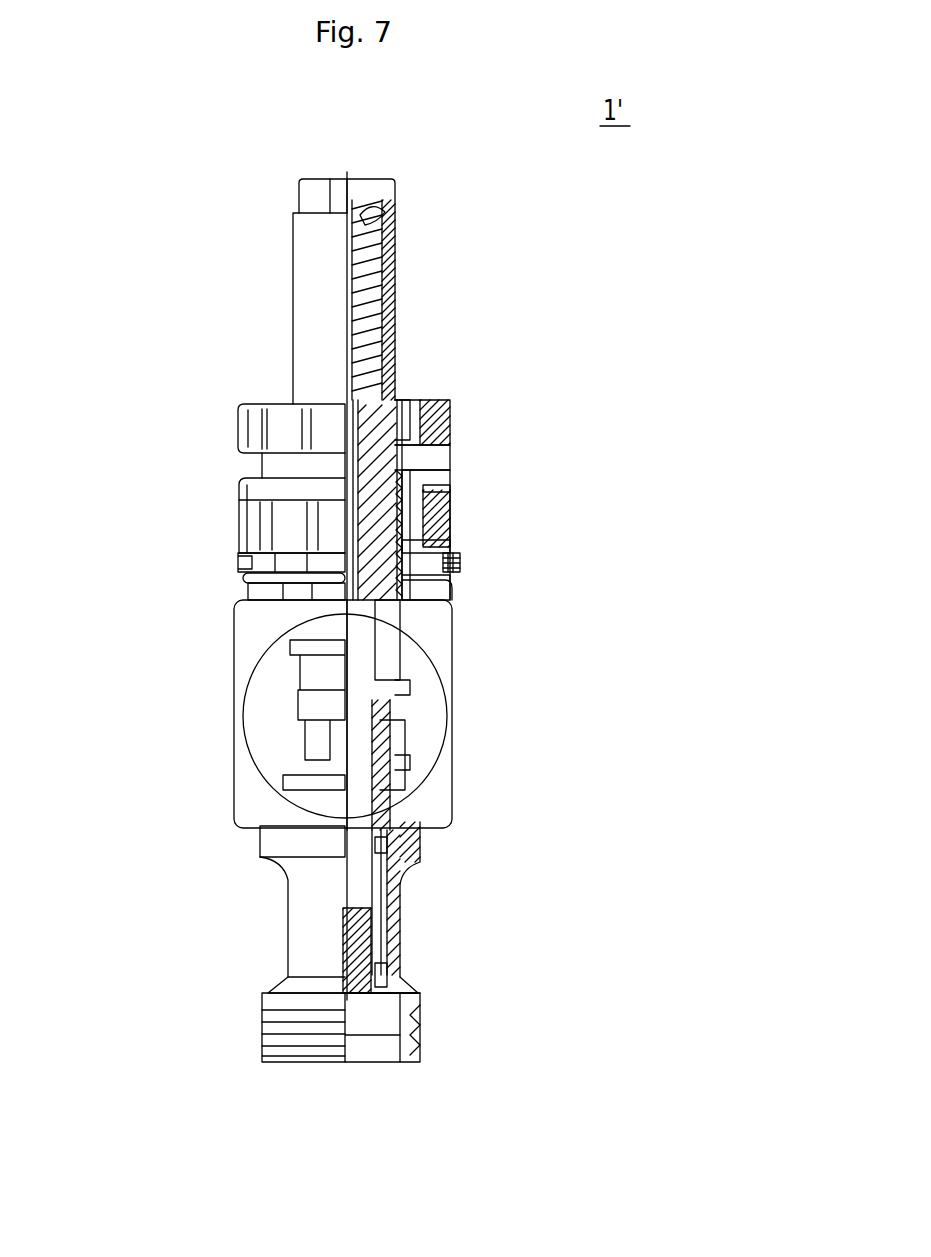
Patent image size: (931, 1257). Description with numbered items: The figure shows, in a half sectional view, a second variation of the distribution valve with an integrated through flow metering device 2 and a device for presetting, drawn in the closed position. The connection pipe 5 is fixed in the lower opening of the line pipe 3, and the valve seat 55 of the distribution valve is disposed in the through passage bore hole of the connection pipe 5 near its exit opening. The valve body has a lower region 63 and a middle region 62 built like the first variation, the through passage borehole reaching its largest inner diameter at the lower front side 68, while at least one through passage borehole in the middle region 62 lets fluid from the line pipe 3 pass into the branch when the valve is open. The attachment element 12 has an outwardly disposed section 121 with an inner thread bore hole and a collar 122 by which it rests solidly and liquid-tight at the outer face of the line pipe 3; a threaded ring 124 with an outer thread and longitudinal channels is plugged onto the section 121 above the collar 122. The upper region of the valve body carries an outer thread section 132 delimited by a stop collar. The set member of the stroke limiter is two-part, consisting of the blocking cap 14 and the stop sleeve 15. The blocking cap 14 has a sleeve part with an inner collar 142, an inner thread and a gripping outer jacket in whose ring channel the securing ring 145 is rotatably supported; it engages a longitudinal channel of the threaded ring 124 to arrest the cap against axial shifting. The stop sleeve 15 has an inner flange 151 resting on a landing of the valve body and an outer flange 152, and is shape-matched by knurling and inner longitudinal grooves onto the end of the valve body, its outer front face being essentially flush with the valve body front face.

The through flow metering device 2 is at (428, 243).
The inner flange 151 is at (410, 403).
The stop sleeve 15 is at (443, 477).
The blocking cap 14 is at (457, 477).
The inner collar 142 is at (447, 488).
The outer flange 152 is at (447, 517).
The threaded ring 124 is at (447, 541).
The securing ring 145 is at (467, 563).
The collar 122 is at (447, 598).
The attachment element 12 is at (462, 612).
The outer thread section 132 is at (375, 490).
The outside disposed section 121 is at (355, 588).
The line pipe 3 is at (460, 710).
The middle region 62 is at (400, 684).
The connection pipe 5 is at (408, 945).
The lower region 63 is at (385, 918).
The lower front side 68 is at (395, 957).
The valve seat 55 is at (355, 993).